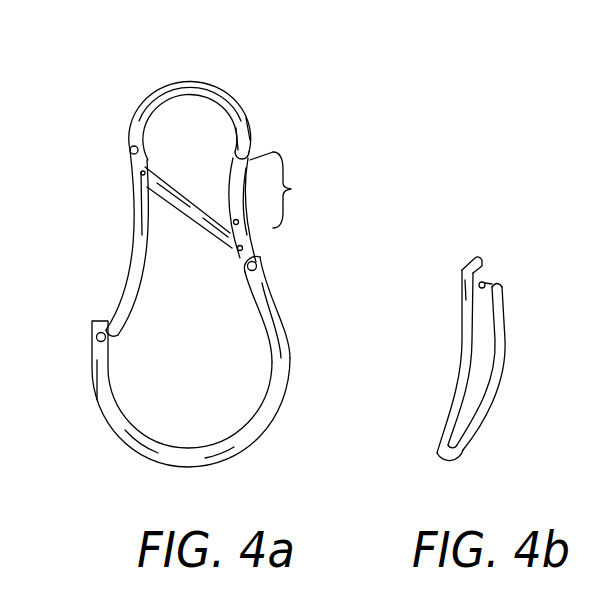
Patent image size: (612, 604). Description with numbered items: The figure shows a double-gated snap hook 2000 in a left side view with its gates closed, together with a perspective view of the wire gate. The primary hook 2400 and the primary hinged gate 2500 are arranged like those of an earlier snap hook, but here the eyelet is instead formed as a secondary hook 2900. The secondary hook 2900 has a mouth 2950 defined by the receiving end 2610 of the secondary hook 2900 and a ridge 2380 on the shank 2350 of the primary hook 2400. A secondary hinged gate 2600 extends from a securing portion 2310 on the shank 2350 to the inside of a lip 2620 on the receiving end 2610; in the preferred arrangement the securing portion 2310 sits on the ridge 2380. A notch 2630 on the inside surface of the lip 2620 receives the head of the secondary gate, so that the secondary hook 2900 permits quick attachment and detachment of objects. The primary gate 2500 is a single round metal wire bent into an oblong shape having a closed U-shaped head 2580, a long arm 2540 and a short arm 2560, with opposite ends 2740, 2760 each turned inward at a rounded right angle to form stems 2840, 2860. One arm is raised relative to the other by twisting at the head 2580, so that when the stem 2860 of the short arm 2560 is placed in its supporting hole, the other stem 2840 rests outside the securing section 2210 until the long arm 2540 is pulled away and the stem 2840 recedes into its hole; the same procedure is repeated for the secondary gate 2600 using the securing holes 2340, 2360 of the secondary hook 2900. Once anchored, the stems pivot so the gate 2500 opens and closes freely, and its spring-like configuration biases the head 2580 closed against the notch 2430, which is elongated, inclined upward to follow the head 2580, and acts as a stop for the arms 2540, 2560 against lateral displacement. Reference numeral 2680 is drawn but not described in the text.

In FIG. 4A, the double-gated snap hook 2000 is at (243, 59).
In FIG. 4A, the secondary hook 2900 is at (173, 80).
In FIG. 4A, the receiving end 2610 is at (251, 116).
In FIG. 4A, the lip 2620 is at (225, 122).
In FIG. 4A, the notch 2630 is at (247, 137).
In FIG. 4A, the gate pivot opening 2680 is at (173, 155).
In FIG. 4A, the secondary hinged gate 2600 is at (275, 153).
In FIG. 4A, the mouth 2950 is at (322, 190).
In FIG. 4A, the securing section 2210 is at (127, 156).
In FIG. 4A, the ridge 2380 is at (242, 237).
In FIG. 4A, the securing portion 2310 is at (260, 256).
In FIG. 4A, the primary hinged gate 2500 is at (121, 283).
In FIG. 4B, the primary hinged gate 2500 is at (487, 430).
In FIG. 4A, the securing hole 2360 is at (238, 246).
In FIG. 4A, the securing hole 2340 is at (247, 271).
In FIG. 4A, the shank 2350 is at (284, 321).
In FIG. 4A, the notch 2430 is at (105, 341).
In FIG. 4A, the primary hook 2400 is at (236, 457).
In FIG. 4B, the stem 2840 is at (473, 259).
In FIG. 4B, the end 2740 is at (462, 270).
In FIG. 4B, the stem 2860 is at (487, 282).
In FIG. 4B, the end 2760 is at (505, 295).
In FIG. 4B, the long arm 2540 is at (461, 355).
In FIG. 4B, the short arm 2560 is at (504, 367).
In FIG. 4B, the head 2580 is at (449, 460).